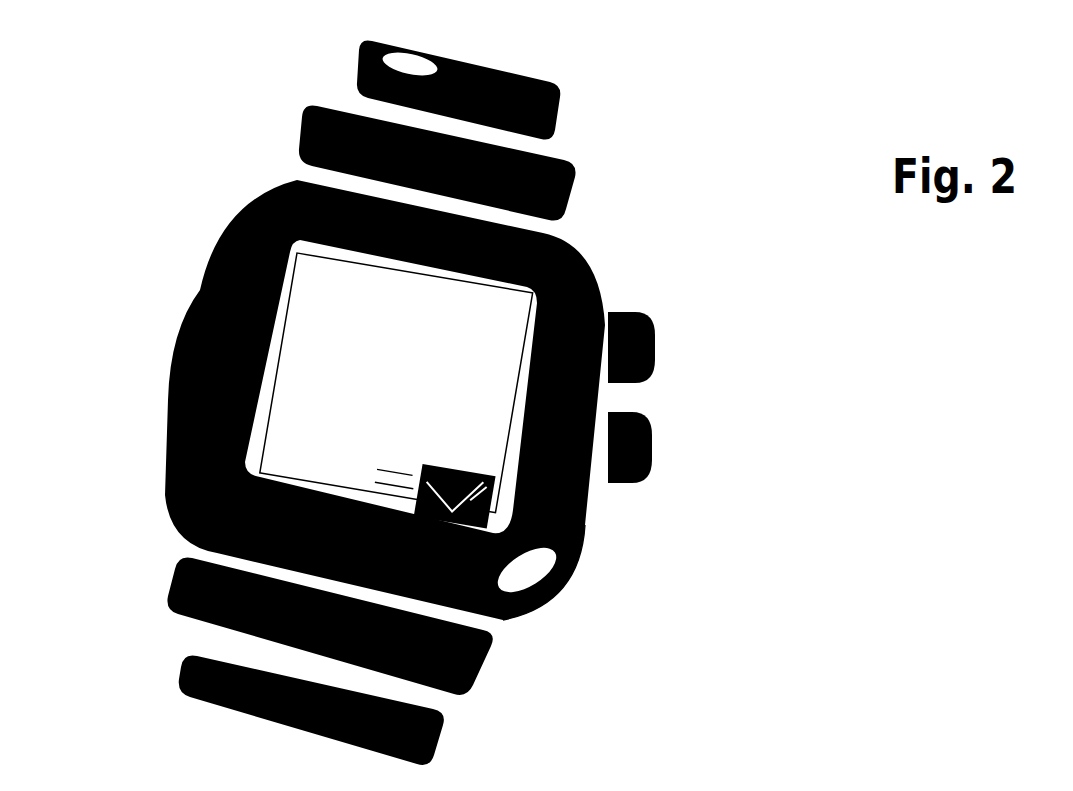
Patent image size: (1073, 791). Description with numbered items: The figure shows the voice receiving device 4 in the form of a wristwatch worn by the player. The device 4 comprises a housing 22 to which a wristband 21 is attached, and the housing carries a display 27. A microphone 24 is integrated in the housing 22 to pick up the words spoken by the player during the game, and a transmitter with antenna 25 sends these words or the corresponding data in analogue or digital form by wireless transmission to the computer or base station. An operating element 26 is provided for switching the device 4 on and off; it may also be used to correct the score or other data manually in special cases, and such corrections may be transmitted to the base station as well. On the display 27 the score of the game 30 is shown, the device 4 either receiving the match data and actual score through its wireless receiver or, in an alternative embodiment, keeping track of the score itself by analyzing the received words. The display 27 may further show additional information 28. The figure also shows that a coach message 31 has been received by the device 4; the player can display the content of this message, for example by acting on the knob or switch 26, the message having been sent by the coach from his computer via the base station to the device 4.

The voice receiving device 4 is at (192, 293).
The wristband 21 is at (587, 182).
The housing 22 is at (163, 488).
The microphone 24 is at (517, 583).
The transmitter with antenna 25 is at (650, 462).
The operating element 26 is at (658, 355).
The display 27 is at (475, 418).
The additional information 28 is at (307, 297).
The score of the game 30 is at (277, 390).
The coach message 31 is at (567, 582).